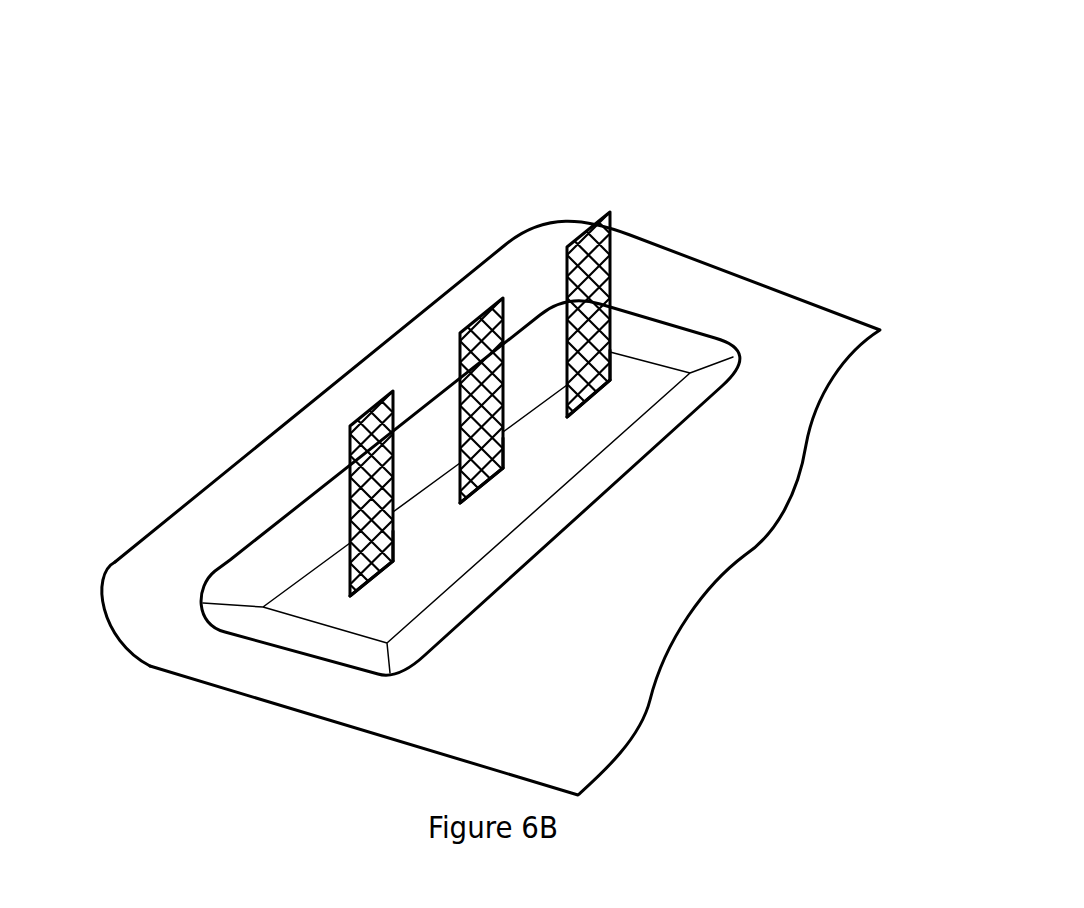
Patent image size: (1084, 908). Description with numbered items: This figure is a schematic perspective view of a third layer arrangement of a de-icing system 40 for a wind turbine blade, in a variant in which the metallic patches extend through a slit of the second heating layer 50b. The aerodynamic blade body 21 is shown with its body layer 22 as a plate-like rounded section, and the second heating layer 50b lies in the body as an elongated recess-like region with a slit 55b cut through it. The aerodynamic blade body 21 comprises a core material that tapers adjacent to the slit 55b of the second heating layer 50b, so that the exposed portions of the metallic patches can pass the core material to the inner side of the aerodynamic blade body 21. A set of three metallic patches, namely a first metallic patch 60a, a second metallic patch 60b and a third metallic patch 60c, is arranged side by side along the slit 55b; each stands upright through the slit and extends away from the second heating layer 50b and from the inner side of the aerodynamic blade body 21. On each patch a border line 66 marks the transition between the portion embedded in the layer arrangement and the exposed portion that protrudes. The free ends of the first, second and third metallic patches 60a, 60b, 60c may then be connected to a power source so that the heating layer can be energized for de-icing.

The aerodynamic blade body 21 is at (668, 283).
The body layer 22 is at (140, 595).
The de-icing system 40 is at (501, 430).
The second heating layer 50b is at (653, 385).
The slit 55b is at (612, 382).
The first metallic patch 60a is at (567, 278).
The second metallic patch 60b is at (460, 350).
The third metallic patch 60c is at (350, 455).
The border line 66 is at (610, 380).